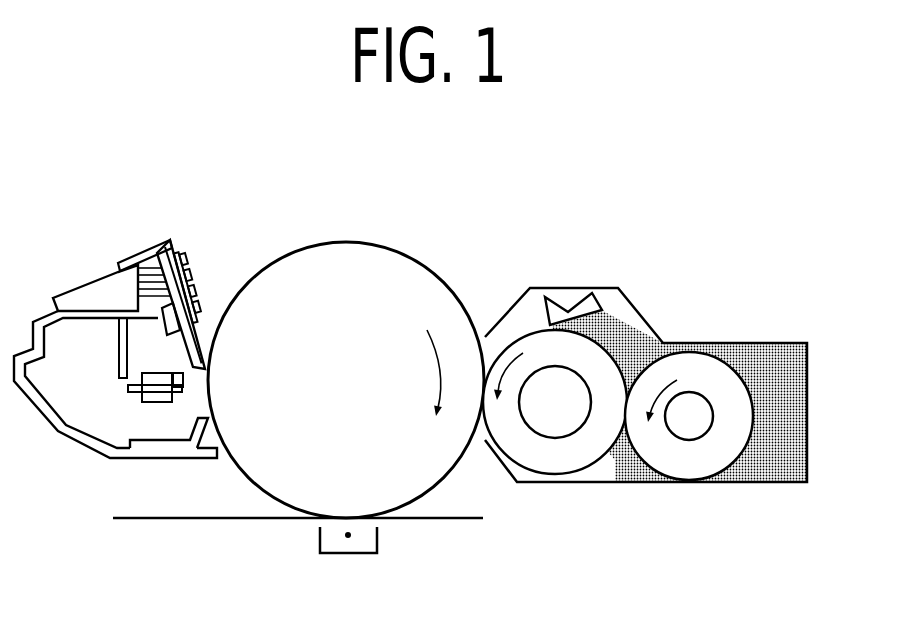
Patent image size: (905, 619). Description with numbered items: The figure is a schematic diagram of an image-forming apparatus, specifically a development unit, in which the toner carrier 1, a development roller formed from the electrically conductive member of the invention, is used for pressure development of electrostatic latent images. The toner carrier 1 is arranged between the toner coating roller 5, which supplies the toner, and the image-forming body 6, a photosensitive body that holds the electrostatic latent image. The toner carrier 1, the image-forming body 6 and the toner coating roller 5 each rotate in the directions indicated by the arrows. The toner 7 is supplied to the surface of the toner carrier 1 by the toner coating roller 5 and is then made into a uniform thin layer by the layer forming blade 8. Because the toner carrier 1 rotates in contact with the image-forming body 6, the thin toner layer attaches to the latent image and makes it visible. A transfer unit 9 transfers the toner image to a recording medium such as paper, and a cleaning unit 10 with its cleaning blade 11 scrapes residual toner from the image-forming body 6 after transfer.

The toner carrier 1 is at (538, 343).
The toner coating roller 5 is at (693, 373).
The image-forming body 6 is at (310, 253).
The toner 7 is at (777, 362).
The layer forming blade 8 is at (573, 293).
The transfer unit 9 is at (348, 553).
The cleaning unit 10 is at (77, 286).
The cleaning blade 11 is at (198, 337).